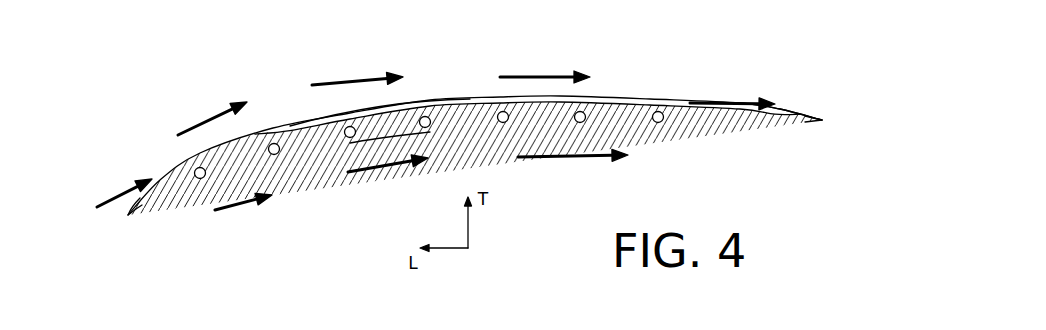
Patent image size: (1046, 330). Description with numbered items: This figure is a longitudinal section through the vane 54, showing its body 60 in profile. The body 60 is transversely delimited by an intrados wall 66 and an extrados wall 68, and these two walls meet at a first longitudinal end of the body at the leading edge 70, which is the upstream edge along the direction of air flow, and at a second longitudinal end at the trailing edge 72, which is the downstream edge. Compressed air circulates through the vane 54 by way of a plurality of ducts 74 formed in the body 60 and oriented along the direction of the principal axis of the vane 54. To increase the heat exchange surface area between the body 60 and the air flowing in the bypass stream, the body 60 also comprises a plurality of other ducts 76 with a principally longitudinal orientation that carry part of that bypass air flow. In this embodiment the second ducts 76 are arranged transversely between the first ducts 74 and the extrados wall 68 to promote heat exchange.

The vane 54 is at (177, 200).
The body 60 is at (790, 112).
The intrados wall 66 is at (373, 137).
The extrados wall 68 is at (423, 100).
The leading edge 70 is at (127, 213).
The trailing edge 72 is at (825, 122).
The ducts 74 is at (193, 158).
The other ducts 76 is at (455, 110).